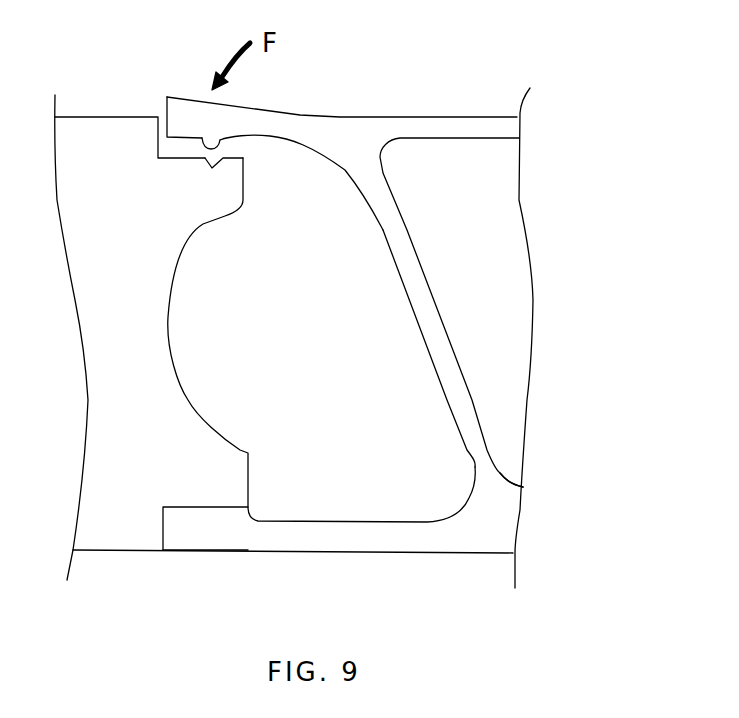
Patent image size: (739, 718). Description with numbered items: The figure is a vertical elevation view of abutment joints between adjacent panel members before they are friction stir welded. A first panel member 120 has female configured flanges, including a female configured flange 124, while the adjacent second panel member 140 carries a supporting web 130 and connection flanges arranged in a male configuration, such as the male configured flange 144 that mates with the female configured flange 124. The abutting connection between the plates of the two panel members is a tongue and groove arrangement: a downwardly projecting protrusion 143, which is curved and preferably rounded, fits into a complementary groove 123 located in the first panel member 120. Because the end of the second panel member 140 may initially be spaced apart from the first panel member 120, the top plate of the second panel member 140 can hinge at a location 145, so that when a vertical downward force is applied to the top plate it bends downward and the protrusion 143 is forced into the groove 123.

The first panel member 120 is at (133, 362).
The groove 123 is at (211, 169).
The female configured flange 124 is at (170, 507).
The supporting web 130 is at (428, 318).
The second panel member 140 is at (495, 510).
The protrusion 143 is at (220, 147).
The male configured flange 144 is at (198, 507).
The hinge location 145 is at (333, 117).